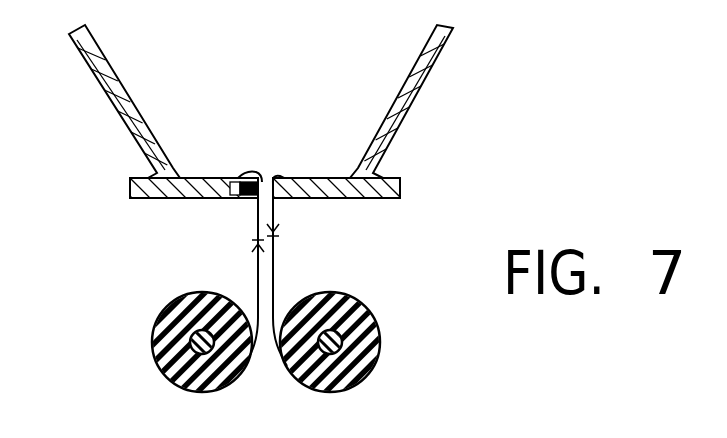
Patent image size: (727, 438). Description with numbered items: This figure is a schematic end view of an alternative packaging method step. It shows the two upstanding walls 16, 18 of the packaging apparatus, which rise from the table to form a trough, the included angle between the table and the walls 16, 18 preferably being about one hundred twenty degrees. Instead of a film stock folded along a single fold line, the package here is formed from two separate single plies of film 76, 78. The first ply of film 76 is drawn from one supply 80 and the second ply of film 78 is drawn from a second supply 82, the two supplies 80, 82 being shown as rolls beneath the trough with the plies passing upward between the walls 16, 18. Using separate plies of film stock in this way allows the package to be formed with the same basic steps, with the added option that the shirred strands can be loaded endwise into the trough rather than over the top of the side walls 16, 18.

The wall 16 is at (404, 118).
The wall 18 is at (127, 126).
The single ply of film 76 is at (124, 88).
The single ply of film 78 is at (409, 76).
The supply 80 is at (165, 306).
The supply 82 is at (367, 305).